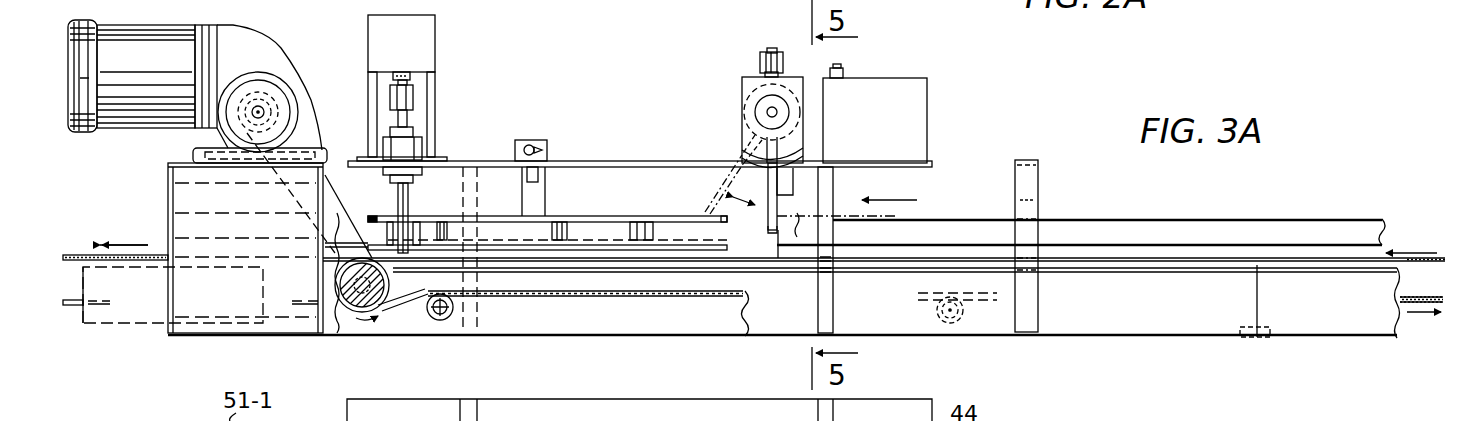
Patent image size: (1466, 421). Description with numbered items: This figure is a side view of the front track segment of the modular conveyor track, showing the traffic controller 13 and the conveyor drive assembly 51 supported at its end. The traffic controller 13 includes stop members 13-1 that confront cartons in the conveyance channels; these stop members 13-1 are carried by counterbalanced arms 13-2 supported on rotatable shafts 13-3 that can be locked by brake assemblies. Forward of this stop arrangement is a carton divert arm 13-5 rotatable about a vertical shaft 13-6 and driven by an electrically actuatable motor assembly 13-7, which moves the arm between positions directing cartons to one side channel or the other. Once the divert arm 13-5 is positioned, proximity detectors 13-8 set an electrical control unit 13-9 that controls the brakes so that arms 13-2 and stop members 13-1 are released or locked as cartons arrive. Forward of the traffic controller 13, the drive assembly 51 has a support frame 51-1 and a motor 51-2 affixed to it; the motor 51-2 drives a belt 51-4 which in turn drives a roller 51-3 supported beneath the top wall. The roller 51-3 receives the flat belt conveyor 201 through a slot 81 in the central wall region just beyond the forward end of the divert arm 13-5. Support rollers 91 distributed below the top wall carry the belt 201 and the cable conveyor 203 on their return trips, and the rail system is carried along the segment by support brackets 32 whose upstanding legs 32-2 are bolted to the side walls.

The conveyor drive assembly 51 is at (321, 34).
The support frame 51-1 is at (176, 200).
The motor 51-2 is at (145, 47).
The roller 51-3 is at (360, 303).
The belt 51-4 is at (328, 173).
The slot 81 is at (333, 332).
The support rollers 91 is at (445, 320).
The flat belt conveyor 201 is at (543, 299).
The nylon encapsulated cable conveyor 203 is at (1440, 260).
The traffic controller 13 is at (649, 130).
The stop members 13-1 is at (763, 230).
The counterbalanced arms 13-2 is at (773, 182).
The rotatable shafts 13-3 is at (753, 90).
The carton divert arm 13-5 is at (607, 231).
The vertical shaft 13-6 is at (407, 208).
The motor assembly 13-7 is at (423, 38).
The proximity detectors 13-8 is at (534, 140).
The electrical control unit 13-9 is at (917, 108).
The support brackets 32 is at (1042, 177).
The upstanding leg 32-2 is at (1027, 207).